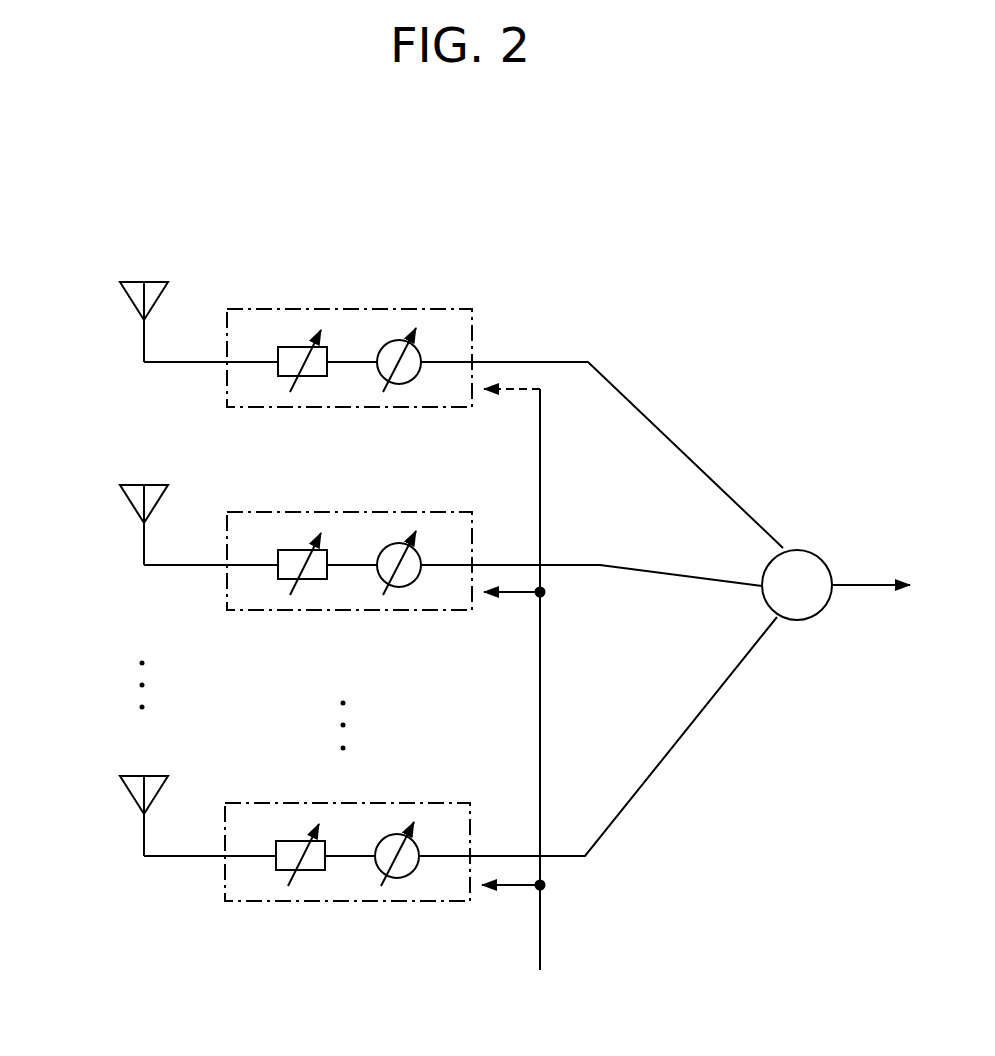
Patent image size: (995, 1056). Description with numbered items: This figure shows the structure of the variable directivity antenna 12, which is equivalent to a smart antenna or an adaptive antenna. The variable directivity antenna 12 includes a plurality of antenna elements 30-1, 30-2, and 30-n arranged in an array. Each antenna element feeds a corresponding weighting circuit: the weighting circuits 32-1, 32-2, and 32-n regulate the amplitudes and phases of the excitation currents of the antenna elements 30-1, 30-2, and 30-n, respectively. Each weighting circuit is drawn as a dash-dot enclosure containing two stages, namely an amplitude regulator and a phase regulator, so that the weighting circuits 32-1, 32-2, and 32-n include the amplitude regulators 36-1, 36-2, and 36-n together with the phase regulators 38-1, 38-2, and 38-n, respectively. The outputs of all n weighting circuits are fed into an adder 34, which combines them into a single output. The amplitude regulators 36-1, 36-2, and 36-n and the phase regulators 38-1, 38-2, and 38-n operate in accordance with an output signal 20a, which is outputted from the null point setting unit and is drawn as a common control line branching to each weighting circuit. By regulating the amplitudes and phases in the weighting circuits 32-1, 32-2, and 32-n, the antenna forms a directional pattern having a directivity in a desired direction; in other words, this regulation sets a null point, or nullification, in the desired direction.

The variable directivity antenna 12 is at (617, 289).
The antenna element 30-1 is at (132, 309).
The antenna element 30-2 is at (132, 512).
The antenna element 30-n is at (132, 803).
The weighting circuit 32-1 is at (414, 309).
The weighting circuit 32-2 is at (414, 512).
The weighting circuit 32-n is at (410, 803).
The adder 34 is at (797, 550).
The amplitude regulator 36-1 is at (312, 376).
The amplitude regulator 36-2 is at (316, 579).
The amplitude regulator 36-n is at (312, 870).
The phase regulator 38-1 is at (400, 384).
The phase regulator 38-2 is at (404, 587).
The phase regulator 38-n is at (400, 878).
The output signal 20a is at (541, 952).